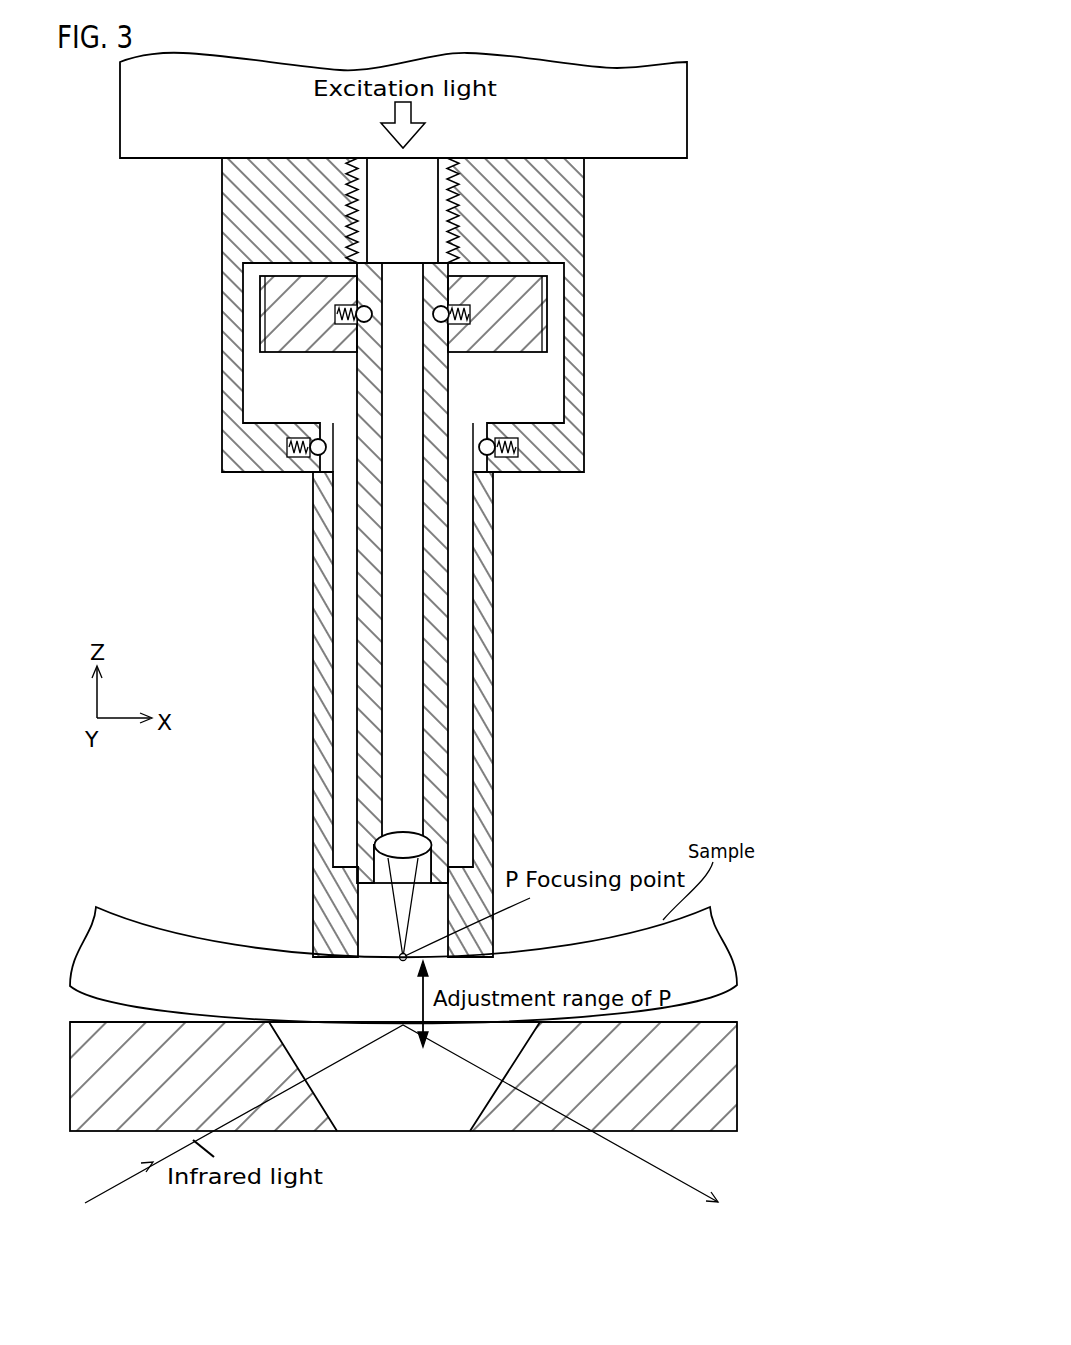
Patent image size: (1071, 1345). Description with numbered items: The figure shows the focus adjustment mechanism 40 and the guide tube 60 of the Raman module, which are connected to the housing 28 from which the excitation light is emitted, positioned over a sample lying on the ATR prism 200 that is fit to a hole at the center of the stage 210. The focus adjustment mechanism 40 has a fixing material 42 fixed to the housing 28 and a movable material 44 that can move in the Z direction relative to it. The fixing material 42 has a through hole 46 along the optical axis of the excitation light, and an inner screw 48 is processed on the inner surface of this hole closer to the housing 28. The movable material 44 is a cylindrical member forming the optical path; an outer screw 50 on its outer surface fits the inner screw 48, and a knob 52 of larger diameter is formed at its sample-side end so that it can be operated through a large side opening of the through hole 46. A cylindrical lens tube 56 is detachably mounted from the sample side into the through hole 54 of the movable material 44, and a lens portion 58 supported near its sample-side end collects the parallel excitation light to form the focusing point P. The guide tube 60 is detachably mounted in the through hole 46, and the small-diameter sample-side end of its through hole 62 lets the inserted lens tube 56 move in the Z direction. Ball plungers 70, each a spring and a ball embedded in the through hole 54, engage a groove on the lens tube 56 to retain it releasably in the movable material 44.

The housing 28 is at (652, 160).
The focus adjustment mechanism 40 is at (183, 312).
The fixing material 42 is at (222, 215).
The movable material 44 is at (325, 360).
The through hole 46 is at (507, 409).
The inner screw 48 is at (443, 170).
The outer screw 50 is at (338, 178).
The knob 52 is at (513, 352).
The through hole 54 is at (419, 224).
The lens tube 56 is at (450, 638).
The lens portion 58 is at (403, 830).
The guide tube 60 is at (495, 738).
The through hole 62 is at (462, 583).
The ball plunger 70 is at (472, 312).
The ATR prism 200 is at (372, 1132).
The stage 210 is at (712, 1022).